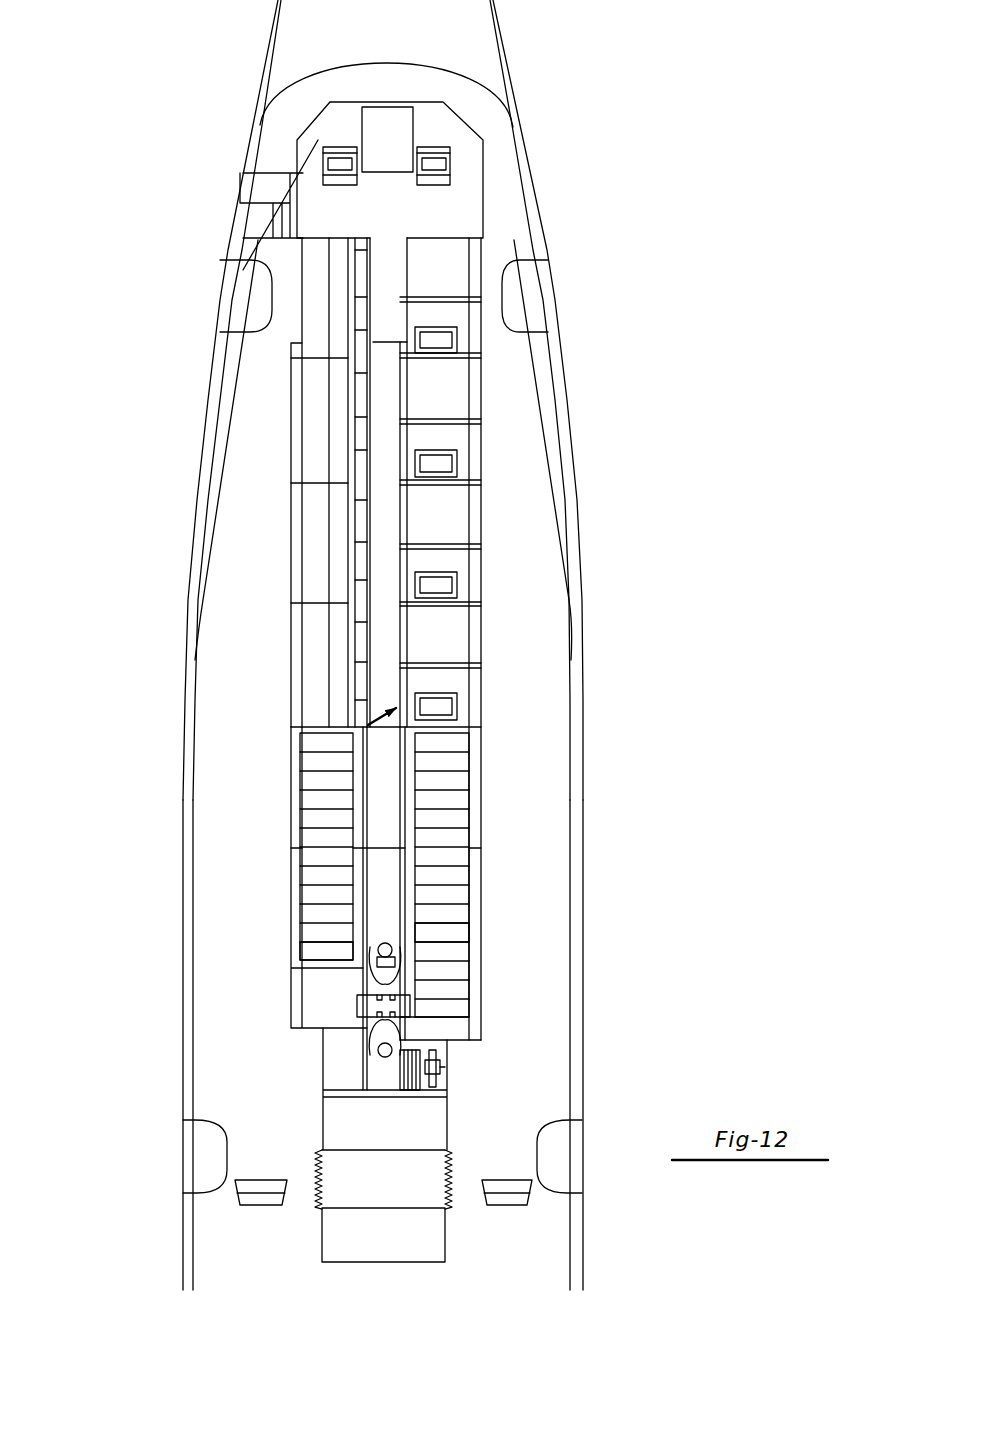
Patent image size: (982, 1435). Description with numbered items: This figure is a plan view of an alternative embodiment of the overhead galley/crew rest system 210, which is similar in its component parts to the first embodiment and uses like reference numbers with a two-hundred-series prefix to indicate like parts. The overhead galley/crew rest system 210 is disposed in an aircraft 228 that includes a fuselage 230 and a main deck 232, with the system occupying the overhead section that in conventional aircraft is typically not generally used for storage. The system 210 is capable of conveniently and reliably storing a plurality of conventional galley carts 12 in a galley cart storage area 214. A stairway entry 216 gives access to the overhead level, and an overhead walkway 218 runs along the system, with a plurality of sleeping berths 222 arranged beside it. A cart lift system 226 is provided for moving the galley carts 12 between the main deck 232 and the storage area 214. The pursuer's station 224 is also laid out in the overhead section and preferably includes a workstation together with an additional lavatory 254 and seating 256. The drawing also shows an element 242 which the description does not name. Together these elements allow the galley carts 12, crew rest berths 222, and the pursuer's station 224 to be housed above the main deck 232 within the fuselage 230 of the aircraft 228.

The galley cart 12 is at (307, 950).
The overhead galley/crew rest system 210 is at (134, 713).
The galley cart storage area 214 is at (274, 831).
The stairway entry 216 is at (444, 1082).
The overhead walkway 218 is at (380, 790).
The sleeping berth 222 is at (450, 318).
The pursuer's station 224 is at (462, 220).
The cart lift system 226 is at (303, 1010).
The aircraft 228 is at (203, 437).
The fuselage 230 is at (183, 950).
The main deck 232 is at (560, 1102).
The clamp 242 is at (467, 985).
The additional lavatory 254 is at (389, 124).
The seating 256 is at (331, 170).